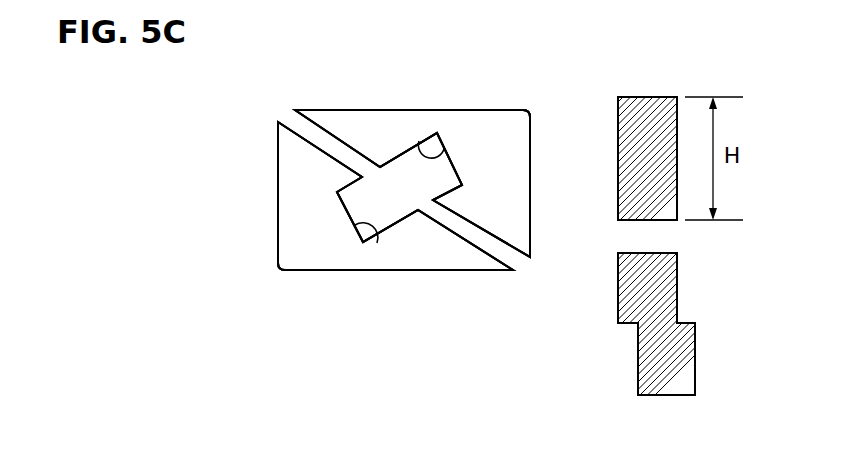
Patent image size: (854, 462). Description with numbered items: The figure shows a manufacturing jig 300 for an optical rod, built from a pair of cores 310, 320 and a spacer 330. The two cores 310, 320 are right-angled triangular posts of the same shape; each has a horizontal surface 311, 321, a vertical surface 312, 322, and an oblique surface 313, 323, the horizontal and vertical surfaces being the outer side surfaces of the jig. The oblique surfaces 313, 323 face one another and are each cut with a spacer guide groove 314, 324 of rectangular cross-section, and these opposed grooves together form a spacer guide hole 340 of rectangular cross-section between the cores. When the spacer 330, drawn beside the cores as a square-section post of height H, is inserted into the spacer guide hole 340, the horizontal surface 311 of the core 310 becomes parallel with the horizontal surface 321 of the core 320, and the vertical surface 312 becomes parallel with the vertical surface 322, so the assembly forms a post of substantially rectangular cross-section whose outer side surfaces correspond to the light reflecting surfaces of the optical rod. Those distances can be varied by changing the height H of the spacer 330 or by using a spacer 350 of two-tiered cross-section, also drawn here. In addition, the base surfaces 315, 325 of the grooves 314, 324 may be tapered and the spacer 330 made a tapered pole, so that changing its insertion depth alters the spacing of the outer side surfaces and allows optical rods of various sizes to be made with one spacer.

The manufacturing jig 300 is at (136, 140).
The core 310 is at (447, 120).
The horizontal surface 311 is at (492, 110).
The vertical surface 312 is at (529, 120).
The oblique surface 313 is at (493, 230).
The spacer guide groove 314 is at (402, 167).
The base surface 315 is at (418, 142).
The core 320 is at (333, 255).
The horizontal surface 321 is at (298, 272).
The vertical surface 322 is at (278, 205).
The oblique surface 323 is at (320, 147).
The spacer guide groove 324 is at (392, 220).
The base surface 325 is at (377, 243).
The spacer 330 is at (622, 193).
The spacer guide hole 340 is at (410, 193).
The spacer 350 is at (665, 293).